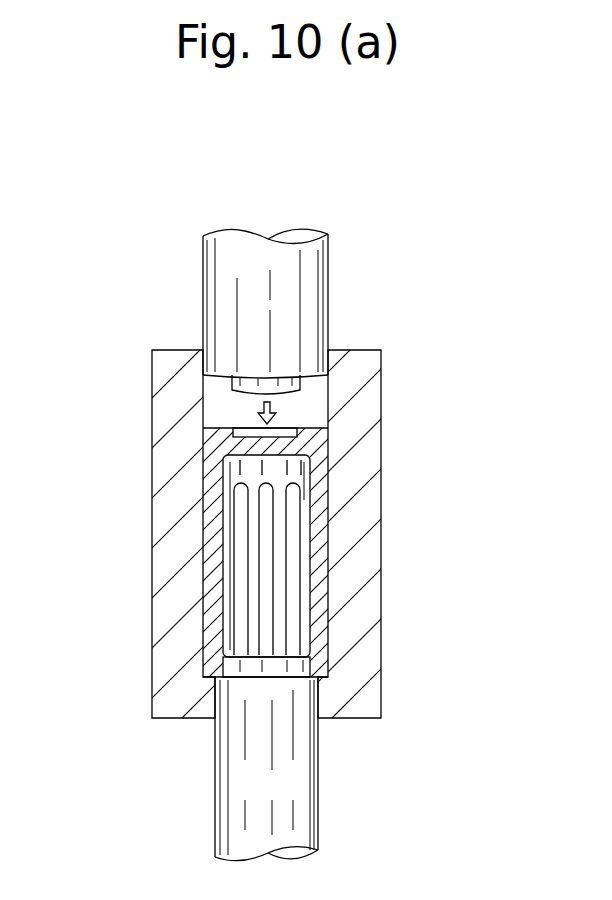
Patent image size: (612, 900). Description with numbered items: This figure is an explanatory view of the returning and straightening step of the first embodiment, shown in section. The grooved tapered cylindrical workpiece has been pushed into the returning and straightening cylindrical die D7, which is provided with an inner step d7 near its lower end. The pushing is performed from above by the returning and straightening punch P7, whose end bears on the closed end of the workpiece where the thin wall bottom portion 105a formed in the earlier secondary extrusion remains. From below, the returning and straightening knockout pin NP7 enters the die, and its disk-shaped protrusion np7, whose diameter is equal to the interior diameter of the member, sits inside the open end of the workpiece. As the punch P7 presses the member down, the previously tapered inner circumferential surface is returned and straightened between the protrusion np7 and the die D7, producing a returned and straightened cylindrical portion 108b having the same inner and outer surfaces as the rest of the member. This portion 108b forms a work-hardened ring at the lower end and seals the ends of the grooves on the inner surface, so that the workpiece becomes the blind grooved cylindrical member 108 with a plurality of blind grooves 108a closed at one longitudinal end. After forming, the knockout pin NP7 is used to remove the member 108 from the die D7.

The returning and straightening punch P7 is at (343, 301).
The returning and straightening cylindrical die D7 is at (394, 548).
The thin wall bottom portion 105a is at (286, 430).
The blind grooved cylindrical member 108 is at (213, 503).
The blind grooves 108a is at (243, 577).
The returned and straightened cylindrical portion 108b is at (312, 663).
The inner step d7 is at (207, 678).
The disk-shaped protrusion np7 is at (284, 668).
The returning and straightening knockout pin NP7 is at (334, 813).